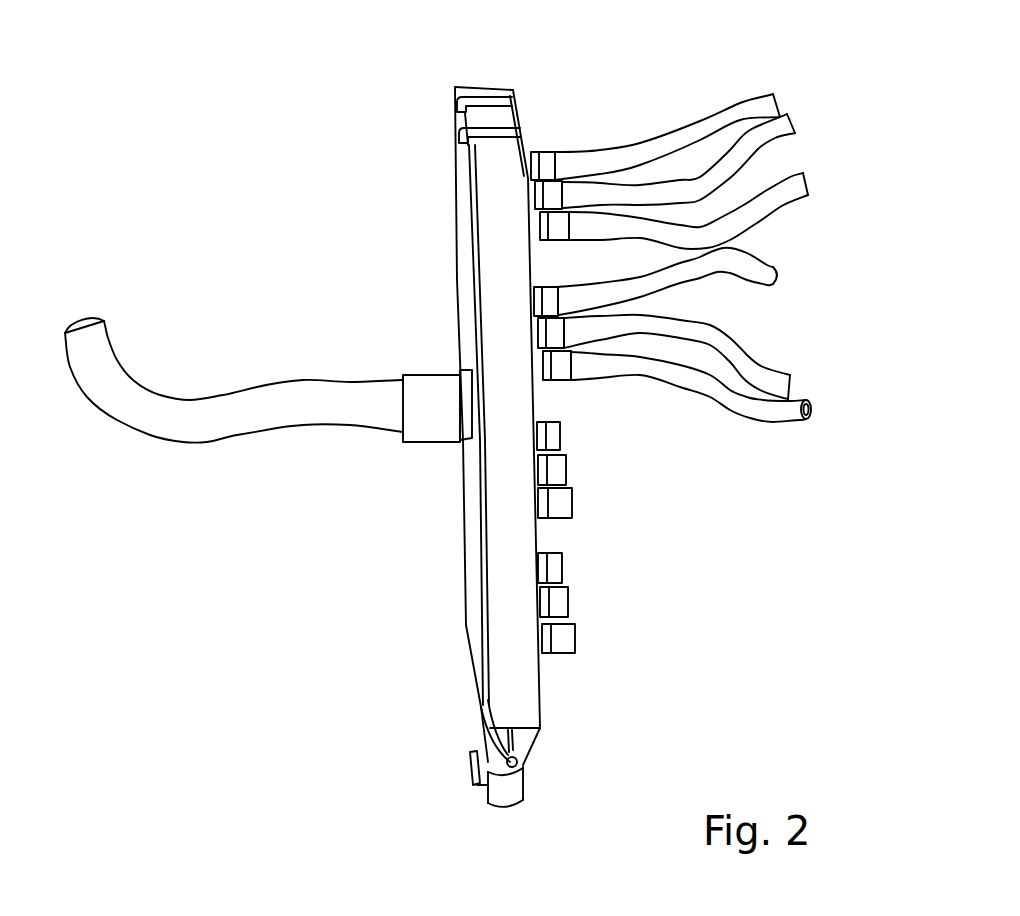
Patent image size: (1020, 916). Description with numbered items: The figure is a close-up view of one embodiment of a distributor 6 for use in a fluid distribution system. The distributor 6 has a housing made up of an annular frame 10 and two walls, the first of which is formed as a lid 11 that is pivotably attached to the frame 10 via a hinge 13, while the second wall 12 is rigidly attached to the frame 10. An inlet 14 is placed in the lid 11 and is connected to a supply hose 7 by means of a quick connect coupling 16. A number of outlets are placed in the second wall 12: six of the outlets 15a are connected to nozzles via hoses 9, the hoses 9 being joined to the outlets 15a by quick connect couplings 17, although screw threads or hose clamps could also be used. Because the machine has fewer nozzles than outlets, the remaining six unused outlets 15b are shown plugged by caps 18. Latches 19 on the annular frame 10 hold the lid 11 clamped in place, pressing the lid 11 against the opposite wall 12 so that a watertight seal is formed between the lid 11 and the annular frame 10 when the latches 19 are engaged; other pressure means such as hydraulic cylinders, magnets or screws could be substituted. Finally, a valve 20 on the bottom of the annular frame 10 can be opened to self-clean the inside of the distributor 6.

The distributor 6 is at (403, 586).
The hose 7 is at (203, 408).
The hoses 9 is at (699, 121).
The annular frame 10 is at (498, 88).
The lid 11 is at (466, 231).
The second wall 12 is at (525, 121).
The hinge 13 is at (517, 763).
The inlet 14 is at (463, 378).
The outlets 15a is at (540, 242).
The unused outlets 15b is at (540, 519).
The quick connect coupling 16 is at (423, 390).
The quick connect couplings 17 is at (556, 152).
The caps 18 is at (573, 497).
The latches 19 is at (458, 141).
The valve 20 is at (477, 784).